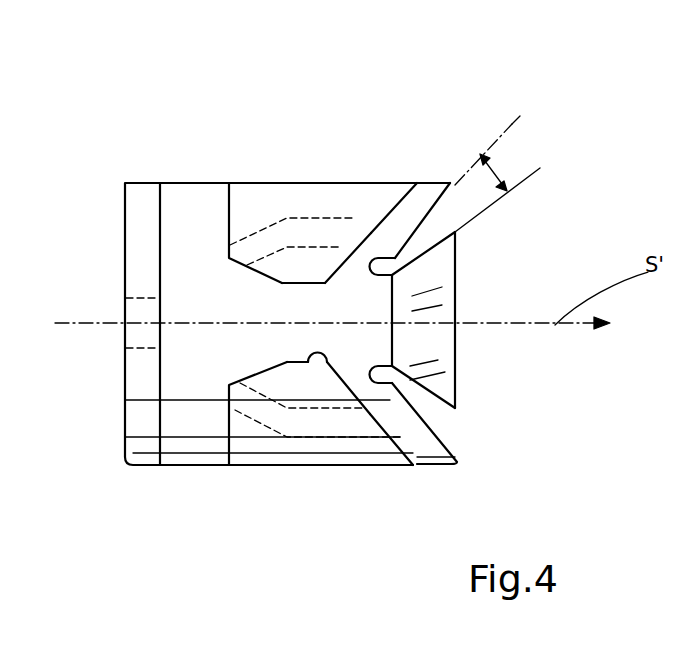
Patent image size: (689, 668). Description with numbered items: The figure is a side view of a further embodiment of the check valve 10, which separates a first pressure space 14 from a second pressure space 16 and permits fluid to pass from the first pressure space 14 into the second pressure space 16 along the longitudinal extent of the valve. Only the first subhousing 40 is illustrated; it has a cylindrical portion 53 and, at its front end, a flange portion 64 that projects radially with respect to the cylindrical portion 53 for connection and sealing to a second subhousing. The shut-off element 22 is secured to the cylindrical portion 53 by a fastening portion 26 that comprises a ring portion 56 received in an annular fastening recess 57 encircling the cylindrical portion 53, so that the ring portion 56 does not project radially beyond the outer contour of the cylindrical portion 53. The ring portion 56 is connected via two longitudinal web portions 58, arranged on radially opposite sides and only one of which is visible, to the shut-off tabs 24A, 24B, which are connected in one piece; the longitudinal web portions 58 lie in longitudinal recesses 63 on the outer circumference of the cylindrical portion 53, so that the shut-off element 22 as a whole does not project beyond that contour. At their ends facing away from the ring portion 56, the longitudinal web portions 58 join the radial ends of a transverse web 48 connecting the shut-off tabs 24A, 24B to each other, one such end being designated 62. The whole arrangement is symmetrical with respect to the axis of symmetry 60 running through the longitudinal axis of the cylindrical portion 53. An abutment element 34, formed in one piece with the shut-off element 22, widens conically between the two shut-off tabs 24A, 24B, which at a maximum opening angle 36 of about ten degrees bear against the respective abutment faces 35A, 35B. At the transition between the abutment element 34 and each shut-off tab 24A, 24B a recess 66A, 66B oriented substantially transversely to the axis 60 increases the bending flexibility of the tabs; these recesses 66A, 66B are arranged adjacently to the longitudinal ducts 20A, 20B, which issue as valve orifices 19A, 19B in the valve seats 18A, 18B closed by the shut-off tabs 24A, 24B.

The check valve 10 is at (508, 168).
The first pressure space 14 is at (145, 305).
The second pressure space 16 is at (524, 284).
The valve seat 18A is at (392, 216).
The valve seat 18B is at (413, 442).
The valve orifice 19A is at (385, 212).
The valve orifice 19B is at (365, 405).
The longitudinal duct 20A is at (303, 205).
The longitudinal duct 20B is at (257, 417).
The shut-off element 22 is at (437, 184).
The shut-off tab 24A is at (418, 207).
The shut-off tab 24B is at (413, 428).
The fastening portion 26 is at (203, 485).
The abutment element 34 is at (443, 343).
The abutment face 35A is at (435, 250).
The abutment face 35B is at (428, 400).
The maximum opening angle 36 is at (497, 178).
The first subhousing 40 is at (312, 183).
The transverse web 48 is at (419, 391).
The cylindrical portion 53 is at (253, 183).
The ring portion 56 is at (197, 197).
The annular fastening recess 57 is at (161, 221).
The longitudinal web portion 58 is at (300, 300).
The axis of symmetry 60 is at (83, 322).
The end of transverse web 62 is at (370, 304).
The longitudinal recess 63 is at (326, 364).
The flange portion 64 is at (138, 457).
The recess 66A is at (375, 260).
The recess 66B is at (380, 385).